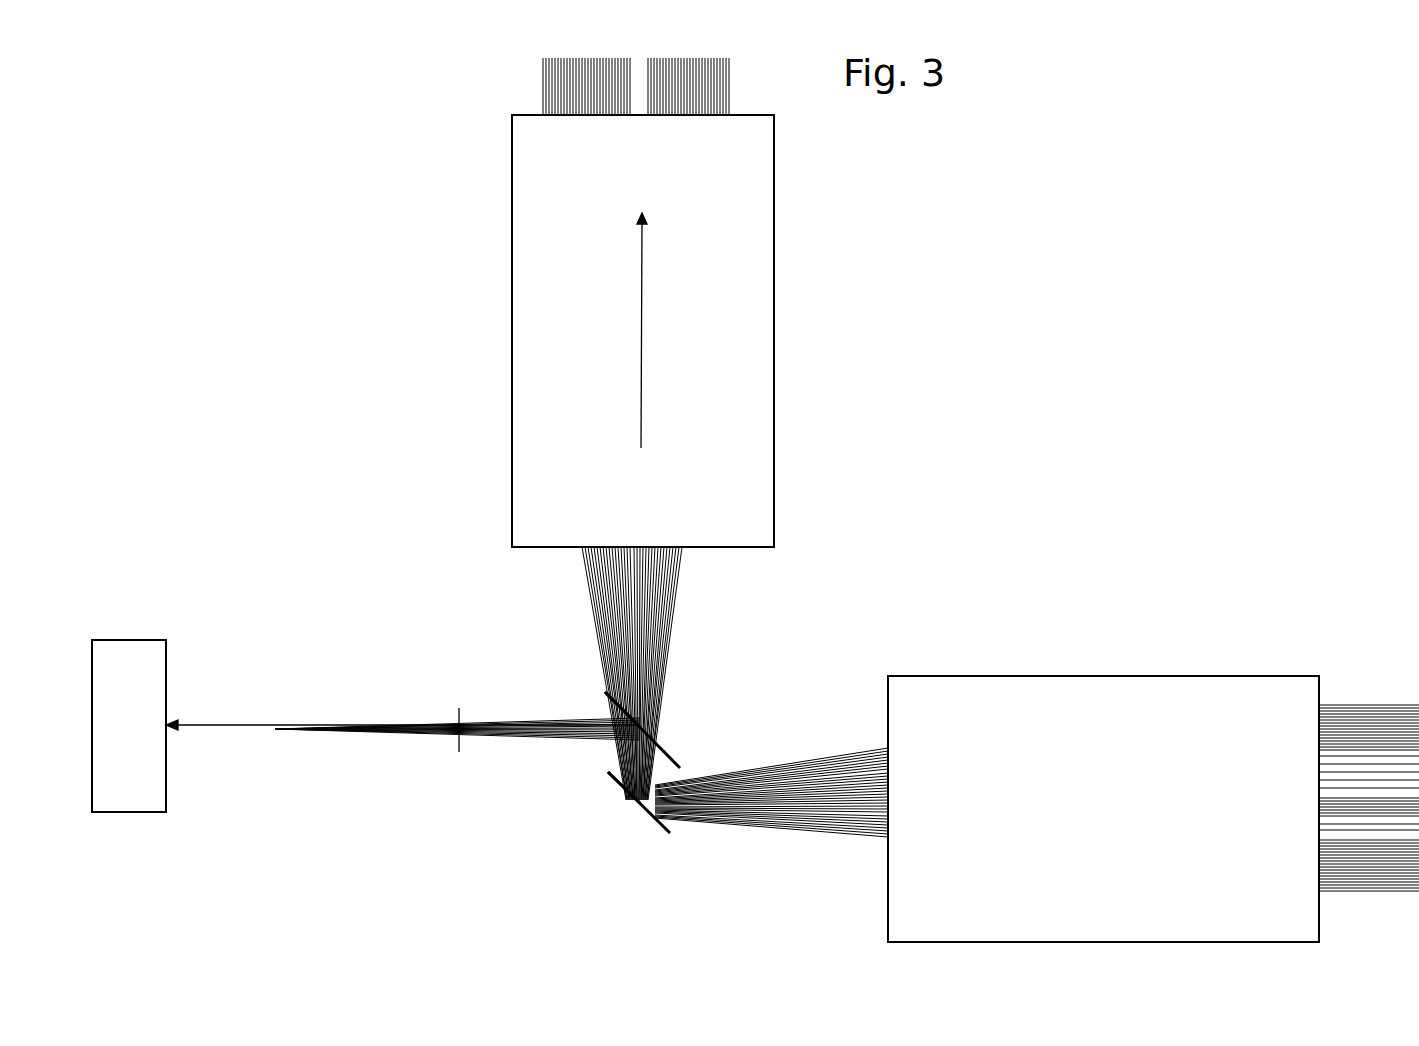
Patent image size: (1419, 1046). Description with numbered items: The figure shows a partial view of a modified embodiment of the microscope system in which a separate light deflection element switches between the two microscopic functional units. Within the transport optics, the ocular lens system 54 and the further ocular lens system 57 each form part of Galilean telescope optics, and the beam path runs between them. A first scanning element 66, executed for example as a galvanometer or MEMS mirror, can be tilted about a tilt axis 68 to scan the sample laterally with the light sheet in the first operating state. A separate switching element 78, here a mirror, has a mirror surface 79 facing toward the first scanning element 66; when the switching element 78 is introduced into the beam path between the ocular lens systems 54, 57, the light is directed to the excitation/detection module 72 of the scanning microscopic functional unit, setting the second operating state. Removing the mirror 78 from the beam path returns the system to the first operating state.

The ocular lens system 54 is at (1118, 676).
The ocular lens system 57 is at (774, 425).
The first scanning element 66 is at (670, 835).
The tilt axis 68 is at (637, 801).
The excitation/detection module 72 is at (166, 672).
The switching element 78 is at (670, 752).
The mirror surface 79 is at (606, 693).